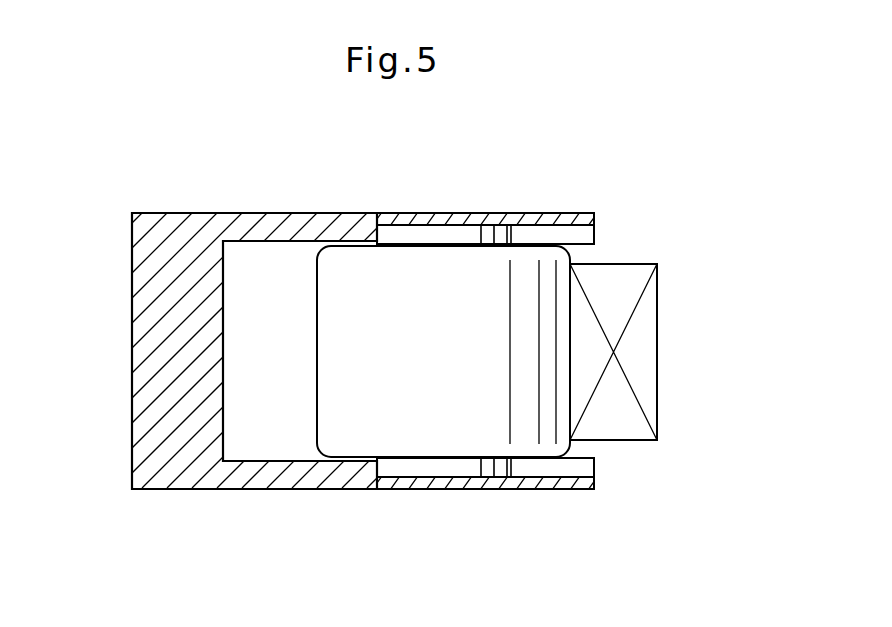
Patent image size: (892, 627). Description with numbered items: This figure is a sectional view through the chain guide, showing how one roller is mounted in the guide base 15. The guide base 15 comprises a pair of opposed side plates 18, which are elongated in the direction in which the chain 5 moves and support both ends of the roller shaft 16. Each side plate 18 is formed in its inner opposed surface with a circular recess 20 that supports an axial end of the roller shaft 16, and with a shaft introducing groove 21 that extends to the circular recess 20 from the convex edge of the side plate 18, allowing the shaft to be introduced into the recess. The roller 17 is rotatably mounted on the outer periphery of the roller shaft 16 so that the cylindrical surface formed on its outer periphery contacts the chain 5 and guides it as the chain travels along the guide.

The guide base 15 is at (240, 213).
The roller shaft 16 is at (447, 237).
The roller 17 is at (547, 256).
The side plate 18 is at (594, 219).
The circular recess 20 is at (378, 234).
The shaft introducing groove 21 is at (552, 225).
The chain 5 is at (640, 340).